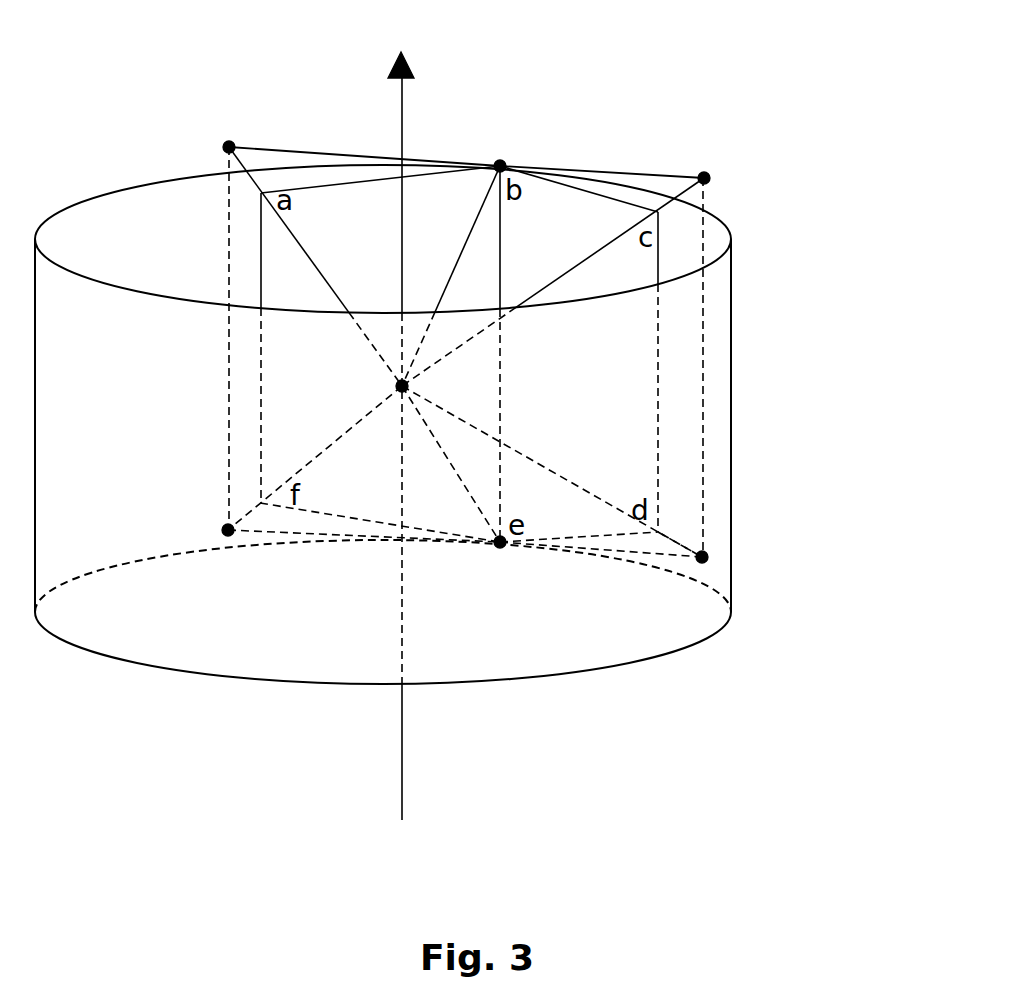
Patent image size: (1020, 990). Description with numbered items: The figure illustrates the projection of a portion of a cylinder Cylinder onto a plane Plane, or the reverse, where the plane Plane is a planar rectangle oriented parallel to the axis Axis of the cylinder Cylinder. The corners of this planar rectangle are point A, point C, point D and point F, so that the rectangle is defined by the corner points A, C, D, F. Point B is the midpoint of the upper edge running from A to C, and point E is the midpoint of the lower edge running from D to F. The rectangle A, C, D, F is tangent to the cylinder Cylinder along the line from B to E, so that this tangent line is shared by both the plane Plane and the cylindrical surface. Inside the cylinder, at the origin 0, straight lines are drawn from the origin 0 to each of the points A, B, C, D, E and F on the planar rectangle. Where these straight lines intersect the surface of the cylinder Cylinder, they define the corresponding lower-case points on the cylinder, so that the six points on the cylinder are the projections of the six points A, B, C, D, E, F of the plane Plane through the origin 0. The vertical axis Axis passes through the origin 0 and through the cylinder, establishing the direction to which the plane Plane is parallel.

The cylinder Cylinder is at (740, 406).
The axis of the cylinder Axis is at (437, 424).
The plane Plane is at (677, 177).
The point A is at (216, 148).
The point B is at (505, 151).
The point C is at (717, 178).
The point D is at (694, 537).
The point E is at (496, 562).
The point F is at (215, 527).
The origin 0 is at (389, 382).